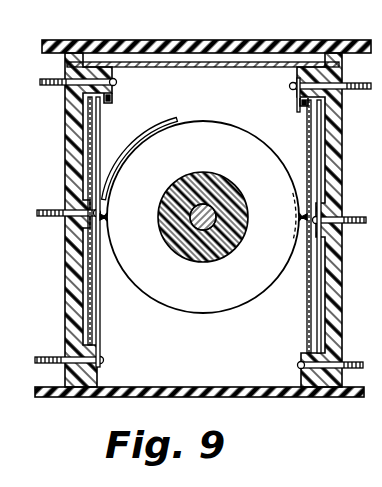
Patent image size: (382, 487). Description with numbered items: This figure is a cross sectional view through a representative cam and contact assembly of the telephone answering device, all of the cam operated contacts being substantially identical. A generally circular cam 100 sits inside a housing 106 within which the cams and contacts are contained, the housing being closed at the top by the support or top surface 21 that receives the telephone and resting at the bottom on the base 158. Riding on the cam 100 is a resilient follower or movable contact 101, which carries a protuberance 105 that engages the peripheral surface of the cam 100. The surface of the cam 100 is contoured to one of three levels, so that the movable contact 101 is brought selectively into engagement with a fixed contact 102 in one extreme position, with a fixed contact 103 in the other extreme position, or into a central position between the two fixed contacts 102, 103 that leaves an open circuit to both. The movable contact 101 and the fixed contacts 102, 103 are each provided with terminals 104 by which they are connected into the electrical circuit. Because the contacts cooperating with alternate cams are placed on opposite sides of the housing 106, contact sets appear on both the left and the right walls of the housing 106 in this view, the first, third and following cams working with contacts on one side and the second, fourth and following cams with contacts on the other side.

The support or top surface 21 is at (232, 40).
The cam 100 is at (207, 123).
The movable contact 101 is at (100, 310).
The fixed contact 102 is at (112, 100).
The fixed contact 103 is at (99, 150).
The terminals 104 is at (45, 86).
The protuberance 105 is at (107, 216).
The housing 106 is at (58, 281).
The base 158 is at (266, 399).